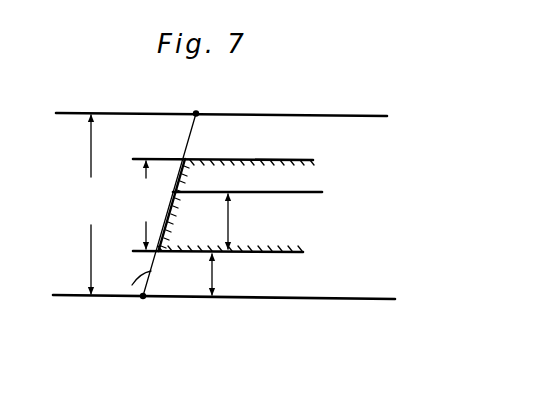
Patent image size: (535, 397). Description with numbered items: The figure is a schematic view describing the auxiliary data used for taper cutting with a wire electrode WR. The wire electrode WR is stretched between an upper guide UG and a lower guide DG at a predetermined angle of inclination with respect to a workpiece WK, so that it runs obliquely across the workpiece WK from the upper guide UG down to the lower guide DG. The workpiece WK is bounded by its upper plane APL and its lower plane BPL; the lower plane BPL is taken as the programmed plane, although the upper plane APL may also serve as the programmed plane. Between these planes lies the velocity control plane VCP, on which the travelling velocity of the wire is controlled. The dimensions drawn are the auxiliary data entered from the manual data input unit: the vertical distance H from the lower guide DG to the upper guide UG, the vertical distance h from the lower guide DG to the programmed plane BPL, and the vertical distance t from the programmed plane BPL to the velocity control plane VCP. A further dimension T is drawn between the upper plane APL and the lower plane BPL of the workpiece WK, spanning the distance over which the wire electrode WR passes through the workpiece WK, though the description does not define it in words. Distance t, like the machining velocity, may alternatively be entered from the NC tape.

The upper guide UG is at (221, 103).
The lower guide DG is at (224, 307).
The upper plane of the workpiece APL is at (293, 160).
The velocity control plane VCP is at (305, 192).
The lower plane of the workpiece BPL is at (291, 253).
The wire electrode WR is at (125, 296).
The workpiece WK is at (273, 227).
The vertical distance between lower guide and upper guide H is at (90, 204).
The depth of working layers T is at (145, 205).
The vertical distance from programmed plane to velocity control plane t is at (235, 221).
The vertical distance from lower guide to programmed plane h is at (221, 274).